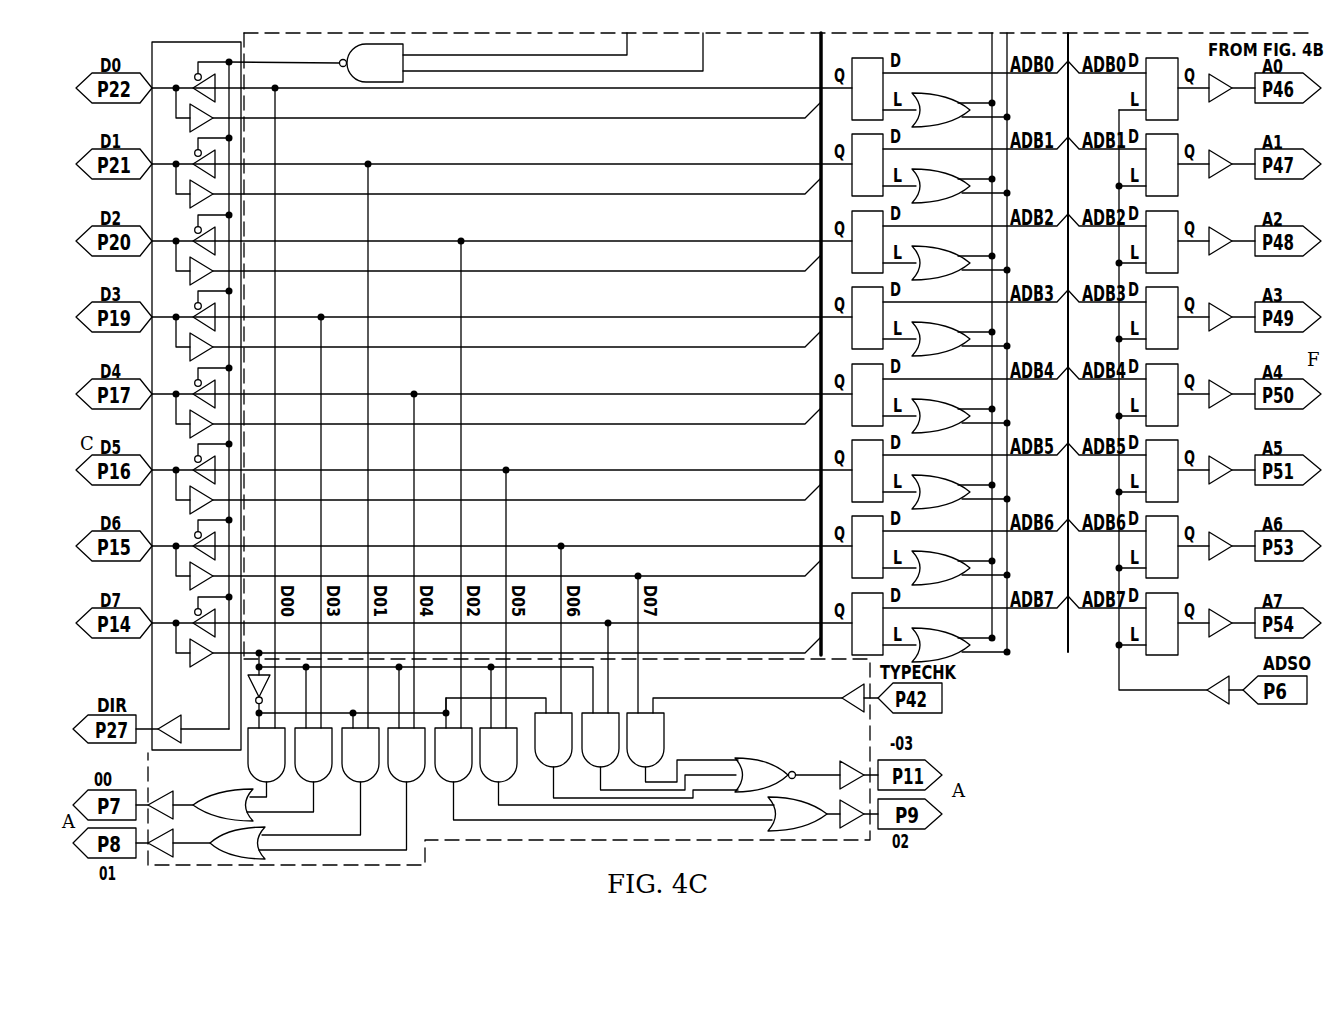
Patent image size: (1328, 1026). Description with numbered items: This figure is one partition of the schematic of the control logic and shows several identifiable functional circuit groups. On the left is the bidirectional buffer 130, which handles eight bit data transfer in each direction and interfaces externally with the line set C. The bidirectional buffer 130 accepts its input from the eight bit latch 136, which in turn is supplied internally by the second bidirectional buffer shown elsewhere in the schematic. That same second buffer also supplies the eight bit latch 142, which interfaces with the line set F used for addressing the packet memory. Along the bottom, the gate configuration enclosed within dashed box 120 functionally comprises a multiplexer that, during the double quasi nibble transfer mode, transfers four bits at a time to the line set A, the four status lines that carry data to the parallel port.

The bidirectional buffer 130 is at (150, 648).
The dashed box gate configuration 120 is at (527, 840).
The eight bit latch 136 is at (838, 670).
The eight bit latch 142 is at (1153, 672).